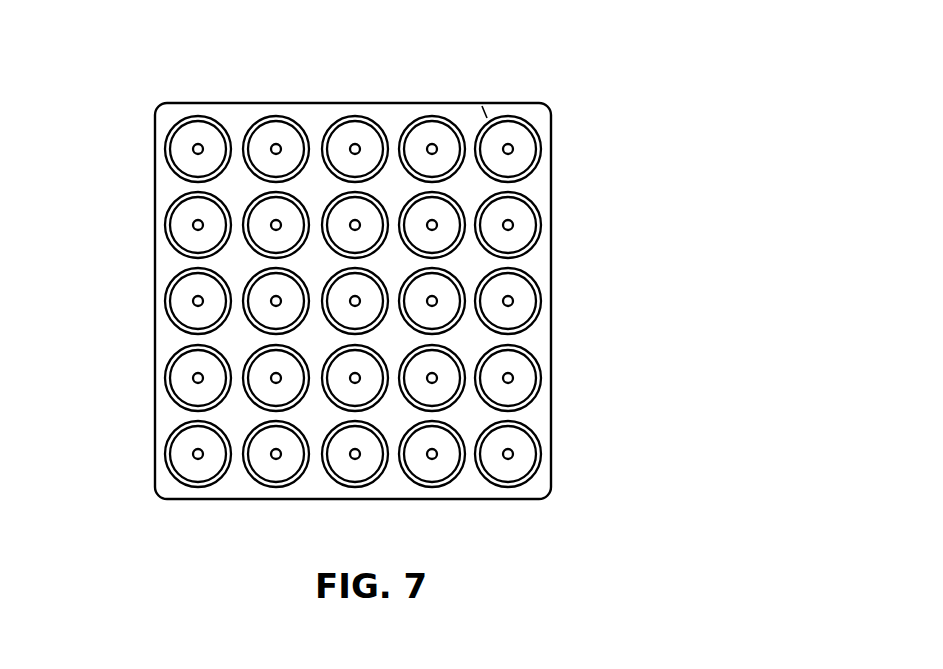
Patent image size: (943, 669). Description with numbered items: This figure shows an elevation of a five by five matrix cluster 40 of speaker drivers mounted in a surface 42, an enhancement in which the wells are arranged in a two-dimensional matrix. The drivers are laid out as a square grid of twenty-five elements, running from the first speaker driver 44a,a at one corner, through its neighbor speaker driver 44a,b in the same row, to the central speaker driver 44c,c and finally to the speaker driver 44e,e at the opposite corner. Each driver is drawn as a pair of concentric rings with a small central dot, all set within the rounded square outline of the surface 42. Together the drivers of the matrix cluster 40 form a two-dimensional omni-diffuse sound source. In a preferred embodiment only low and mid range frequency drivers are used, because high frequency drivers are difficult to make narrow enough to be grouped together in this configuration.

The matrix cluster 40 is at (342, 258).
The surface 42 is at (538, 108).
The speaker driver 44a,a is at (167, 149).
The speaker driver 44a,b is at (167, 225).
The speaker driver 44c,c is at (372, 283).
The speaker driver 44e,e is at (519, 466).